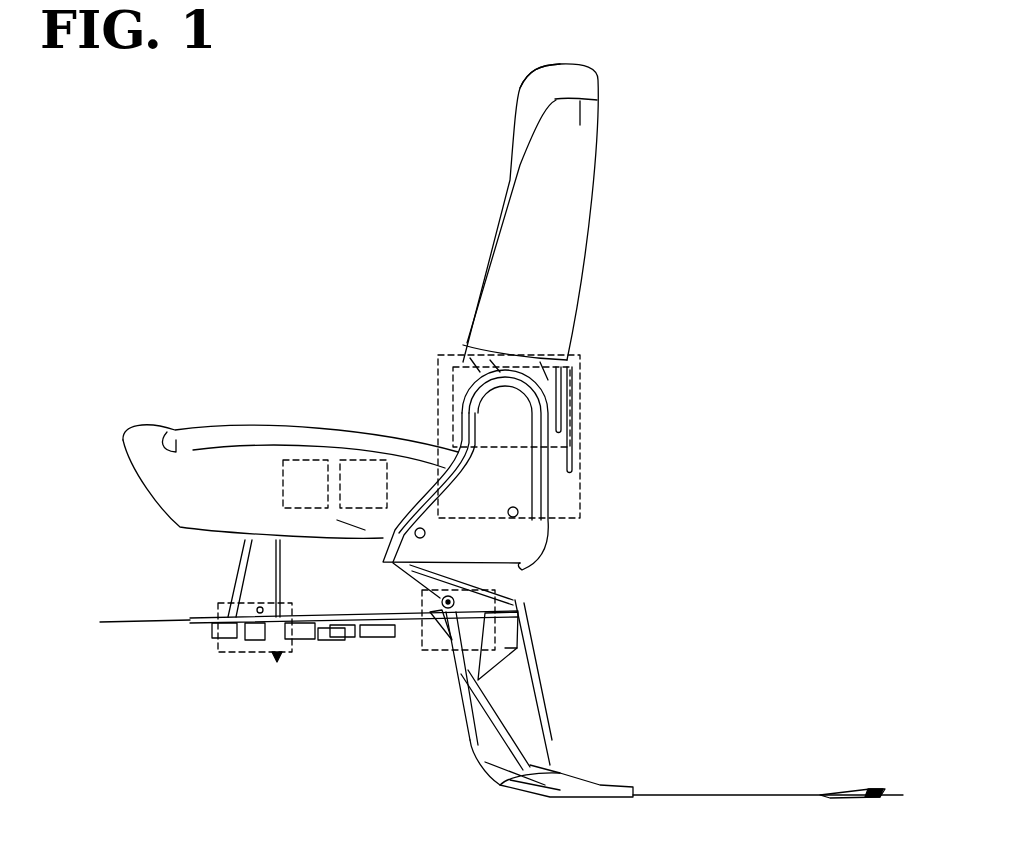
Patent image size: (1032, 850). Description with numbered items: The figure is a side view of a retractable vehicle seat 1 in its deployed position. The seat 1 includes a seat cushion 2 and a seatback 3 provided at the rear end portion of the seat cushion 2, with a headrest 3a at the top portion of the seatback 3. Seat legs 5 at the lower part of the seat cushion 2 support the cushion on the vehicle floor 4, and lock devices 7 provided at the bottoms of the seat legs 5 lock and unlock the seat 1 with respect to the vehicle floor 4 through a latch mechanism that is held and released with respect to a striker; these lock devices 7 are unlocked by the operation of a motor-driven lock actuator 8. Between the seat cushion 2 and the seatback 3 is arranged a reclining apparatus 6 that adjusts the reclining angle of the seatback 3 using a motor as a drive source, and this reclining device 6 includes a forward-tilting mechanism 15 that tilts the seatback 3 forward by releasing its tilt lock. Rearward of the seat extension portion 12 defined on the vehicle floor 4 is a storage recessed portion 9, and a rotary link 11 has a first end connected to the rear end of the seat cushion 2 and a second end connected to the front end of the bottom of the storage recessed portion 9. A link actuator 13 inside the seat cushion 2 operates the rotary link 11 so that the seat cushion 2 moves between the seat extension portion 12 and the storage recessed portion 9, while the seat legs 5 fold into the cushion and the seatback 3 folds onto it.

The seat 1 is at (360, 135).
The seat cushion 2 is at (207, 428).
The seatback 3 is at (585, 232).
The headrest 3a is at (535, 77).
The vehicle floor 4 is at (133, 622).
The seat legs 5 is at (232, 583).
The reclining apparatus 6 is at (580, 490).
The lock devices 7 is at (240, 653).
The lock actuator 8 is at (305, 459).
The storage recessed portion 9 is at (713, 793).
The rotary link 11 is at (537, 663).
The seat extension portion 12 is at (325, 640).
The link actuator 13 is at (362, 458).
The forward-tilting mechanism 15 is at (574, 406).